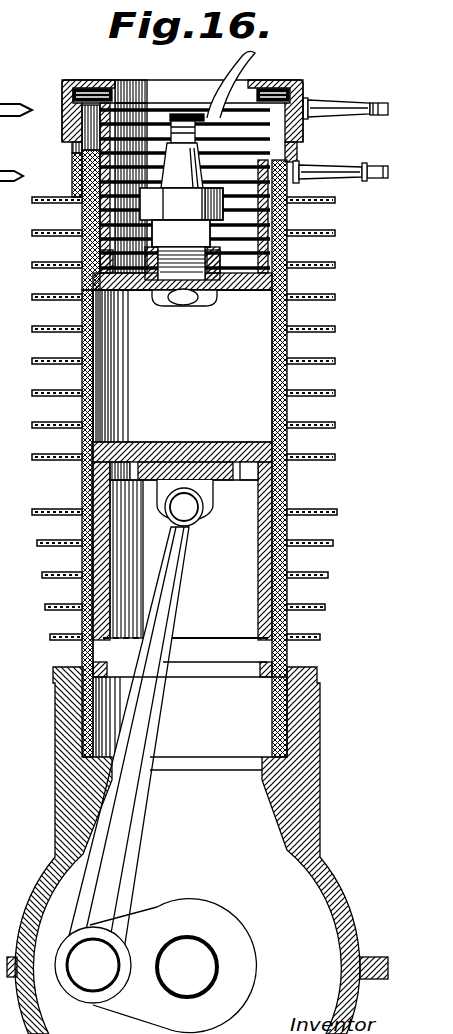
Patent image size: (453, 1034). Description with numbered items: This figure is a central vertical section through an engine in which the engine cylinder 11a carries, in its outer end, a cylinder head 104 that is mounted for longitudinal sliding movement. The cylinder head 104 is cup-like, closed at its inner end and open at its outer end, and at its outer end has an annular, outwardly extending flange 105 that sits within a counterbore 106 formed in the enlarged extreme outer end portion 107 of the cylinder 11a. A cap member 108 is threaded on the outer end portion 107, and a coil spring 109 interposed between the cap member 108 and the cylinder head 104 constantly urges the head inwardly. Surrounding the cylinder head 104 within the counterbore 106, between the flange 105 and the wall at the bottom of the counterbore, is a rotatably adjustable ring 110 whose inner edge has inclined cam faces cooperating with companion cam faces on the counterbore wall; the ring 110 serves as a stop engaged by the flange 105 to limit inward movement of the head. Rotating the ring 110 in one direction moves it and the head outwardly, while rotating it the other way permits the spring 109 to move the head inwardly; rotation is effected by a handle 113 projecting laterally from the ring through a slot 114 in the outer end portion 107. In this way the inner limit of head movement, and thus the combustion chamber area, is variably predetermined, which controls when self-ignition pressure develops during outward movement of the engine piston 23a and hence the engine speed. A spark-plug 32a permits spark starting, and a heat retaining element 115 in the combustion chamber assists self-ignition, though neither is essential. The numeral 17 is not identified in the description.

The counterbore 106 is at (62, 107).
The cap member 108 is at (93, 80).
The coil spring 109 is at (147, 140).
The outer end portion 107 is at (303, 102).
The flange 105 is at (72, 157).
The port connection 17 is at (57, 185).
The ring 110 is at (72, 181).
The slot 114 is at (293, 162).
The handle 113 is at (335, 182).
The cylinder head 104 is at (82, 243).
The spark-plug 32a is at (182, 250).
The heat retaining element 115 is at (182, 306).
The engine cylinder 11a is at (182, 523).
The engine piston 23a is at (182, 523).